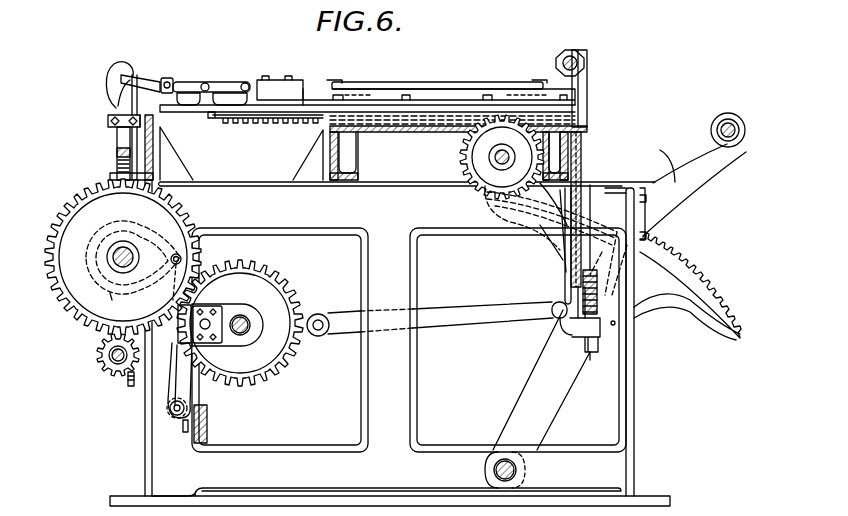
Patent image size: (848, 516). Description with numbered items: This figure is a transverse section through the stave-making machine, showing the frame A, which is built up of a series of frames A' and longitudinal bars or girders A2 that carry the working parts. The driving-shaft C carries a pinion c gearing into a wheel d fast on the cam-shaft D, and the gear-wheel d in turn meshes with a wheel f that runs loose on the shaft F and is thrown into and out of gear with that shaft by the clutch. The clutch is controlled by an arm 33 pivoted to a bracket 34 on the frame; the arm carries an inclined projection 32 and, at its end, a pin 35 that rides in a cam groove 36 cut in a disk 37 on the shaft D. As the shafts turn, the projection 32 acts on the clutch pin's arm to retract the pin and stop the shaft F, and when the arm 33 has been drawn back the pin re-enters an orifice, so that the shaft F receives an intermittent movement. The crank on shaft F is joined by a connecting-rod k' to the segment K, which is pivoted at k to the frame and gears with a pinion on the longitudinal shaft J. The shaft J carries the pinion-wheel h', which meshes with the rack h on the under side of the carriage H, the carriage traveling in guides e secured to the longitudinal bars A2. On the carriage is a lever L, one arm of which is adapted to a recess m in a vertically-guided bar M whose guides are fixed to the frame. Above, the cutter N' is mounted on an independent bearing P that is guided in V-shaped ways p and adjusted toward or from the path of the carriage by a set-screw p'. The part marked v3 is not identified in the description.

The frame A is at (404, 328).
The frames A' is at (409, 340).
The longitudinal bars or girders A2 is at (158, 147).
The segment K is at (453, 257).
The rack h is at (265, 126).
The guides e is at (458, 141).
The bearings P is at (584, 110).
The cutter N' is at (582, 63).
The vertically-guided bar M is at (118, 108).
The recess m is at (127, 83).
The lever L is at (162, 76).
The link v3 is at (211, 82).
The carriage H is at (280, 80).
The longitudinal shaft J is at (509, 157).
The pinion-wheel h' is at (485, 158).
The gear-wheel d is at (123, 257).
The cam-shaft D is at (124, 250).
The disk 37 is at (121, 257).
The cam groove 36 is at (132, 272).
The pin 35 is at (181, 259).
The gear-wheel f is at (240, 323).
The shaft F is at (248, 320).
The connecting-rod k' is at (437, 313).
The inclined projection 32 is at (176, 324).
The arm 33 is at (180, 380).
The bracket 34 is at (180, 416).
The driving-shaft C is at (100, 360).
The pinion c is at (121, 380).
The V-shaped ways p is at (556, 239).
The set-screw p' is at (595, 315).
The pivot k is at (495, 470).